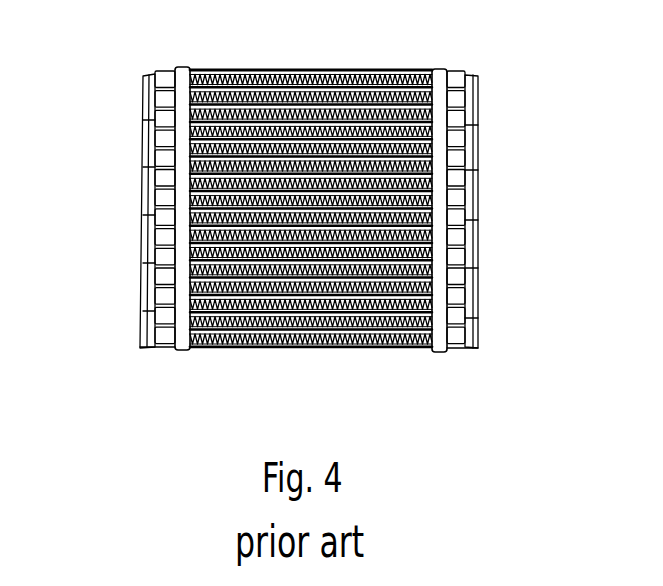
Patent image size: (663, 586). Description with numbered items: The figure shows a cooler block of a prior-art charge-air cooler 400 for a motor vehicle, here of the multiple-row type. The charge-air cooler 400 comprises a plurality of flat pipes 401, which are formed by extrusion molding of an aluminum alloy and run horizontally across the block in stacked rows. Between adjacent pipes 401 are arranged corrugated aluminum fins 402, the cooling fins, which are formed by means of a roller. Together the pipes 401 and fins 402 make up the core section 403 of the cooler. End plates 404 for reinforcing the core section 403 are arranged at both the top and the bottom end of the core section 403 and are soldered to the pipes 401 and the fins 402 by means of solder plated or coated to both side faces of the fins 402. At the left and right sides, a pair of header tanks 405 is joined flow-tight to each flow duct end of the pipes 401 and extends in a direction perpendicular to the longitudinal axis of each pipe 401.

The charge-air cooler 400 is at (120, 237).
The flat pipes 401 is at (212, 346).
The corrugated aluminum fins 402 is at (270, 348).
The core section 403 is at (372, 292).
The end plates 404 is at (340, 70).
The header tanks 405 is at (180, 155).